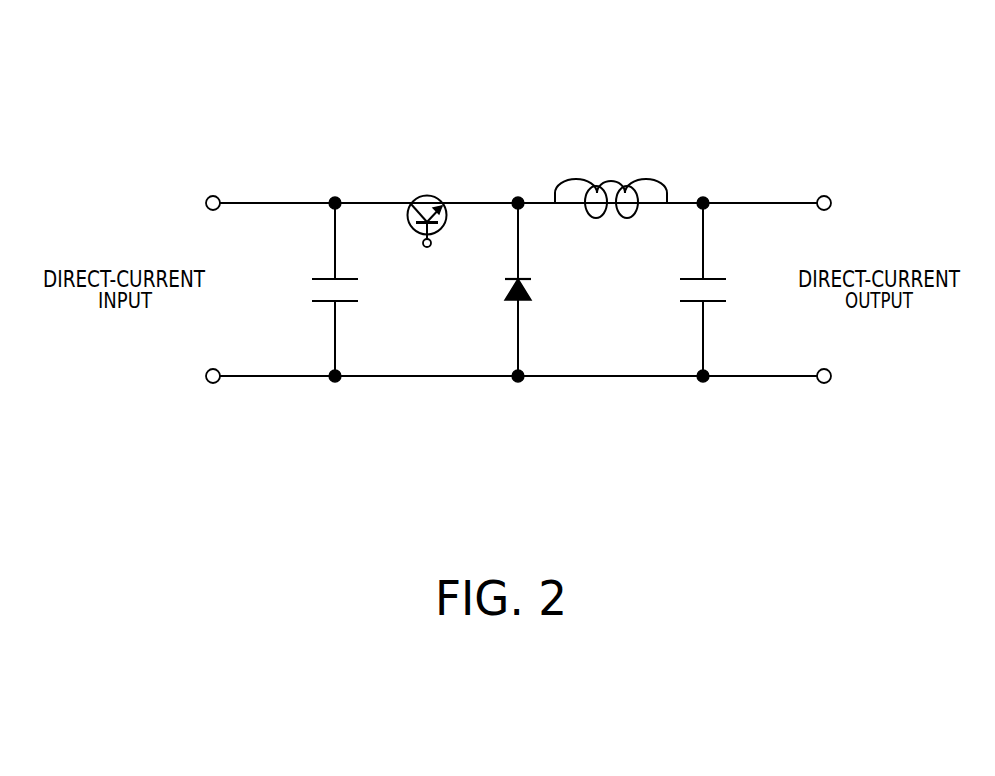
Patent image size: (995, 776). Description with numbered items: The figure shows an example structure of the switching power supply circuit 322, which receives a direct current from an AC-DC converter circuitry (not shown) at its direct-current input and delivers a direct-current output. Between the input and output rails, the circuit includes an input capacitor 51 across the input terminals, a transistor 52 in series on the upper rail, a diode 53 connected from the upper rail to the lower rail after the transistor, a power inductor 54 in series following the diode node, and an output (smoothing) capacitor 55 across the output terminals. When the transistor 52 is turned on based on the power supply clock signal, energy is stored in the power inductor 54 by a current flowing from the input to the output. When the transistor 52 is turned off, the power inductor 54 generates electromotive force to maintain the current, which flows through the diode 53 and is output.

The switching power supply circuit 322 is at (370, 93).
The input capacitor 51 is at (312, 287).
The transistor 52 is at (435, 195).
The diode 53 is at (496, 286).
The power inductor 54 is at (629, 172).
The output (smoothing) capacitor 55 is at (680, 287).